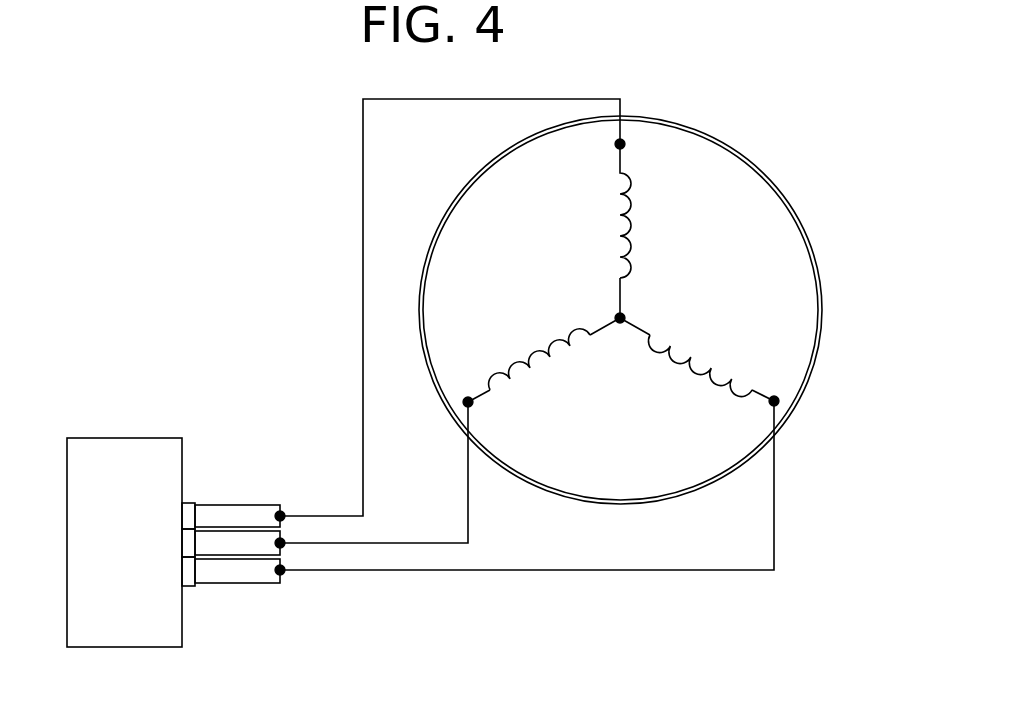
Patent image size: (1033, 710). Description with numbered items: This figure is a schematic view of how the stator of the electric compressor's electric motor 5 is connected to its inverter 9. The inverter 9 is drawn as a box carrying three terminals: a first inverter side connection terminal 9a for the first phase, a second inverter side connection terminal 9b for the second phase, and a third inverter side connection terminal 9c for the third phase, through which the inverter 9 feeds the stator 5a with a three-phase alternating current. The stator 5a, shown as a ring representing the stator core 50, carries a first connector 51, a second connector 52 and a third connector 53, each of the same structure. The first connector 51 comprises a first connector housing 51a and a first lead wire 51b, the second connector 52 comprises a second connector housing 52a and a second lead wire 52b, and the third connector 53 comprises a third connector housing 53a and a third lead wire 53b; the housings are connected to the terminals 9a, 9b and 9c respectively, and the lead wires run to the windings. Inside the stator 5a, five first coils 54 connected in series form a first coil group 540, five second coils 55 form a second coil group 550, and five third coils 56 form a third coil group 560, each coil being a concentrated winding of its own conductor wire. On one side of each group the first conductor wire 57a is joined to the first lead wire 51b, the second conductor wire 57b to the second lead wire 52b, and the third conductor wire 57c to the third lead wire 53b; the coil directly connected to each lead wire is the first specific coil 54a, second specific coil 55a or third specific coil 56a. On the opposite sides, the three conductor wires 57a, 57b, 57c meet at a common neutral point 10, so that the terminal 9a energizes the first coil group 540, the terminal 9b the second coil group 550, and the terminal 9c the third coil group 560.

The electric motor 5 is at (627, 307).
The stator 5a is at (737, 143).
The inverter 9 is at (91, 428).
The first inverter side connection terminal 9a is at (187, 512).
The second inverter side connection terminal 9b is at (187, 546).
The third inverter side connection terminal 9c is at (187, 576).
The neutral point 10 is at (622, 316).
The stator core 50 is at (468, 183).
The first connector 51 is at (407, 313).
The first connector housing 51a is at (243, 504).
The first lead wire 51b is at (362, 272).
The second connector 52 is at (331, 529).
The second connector housing 52a is at (215, 556).
The second lead wire 52b is at (467, 490).
The third connector 53 is at (484, 524).
The third connector housing 53a is at (253, 584).
The third lead wire 53b is at (546, 572).
The first coil 54 is at (629, 200).
The first specific coil 54a is at (620, 178).
The first coil group 540 is at (636, 217).
The second coil 55 is at (523, 371).
The second specific coil 55a is at (503, 375).
The second coil group 550 is at (534, 344).
The third coil 56 is at (660, 340).
The third specific coil 56a is at (738, 388).
The third coil group 560 is at (683, 376).
The first conductor wire 57a is at (623, 146).
The second conductor wire 57b is at (470, 397).
The third conductor wire 57c is at (776, 398).